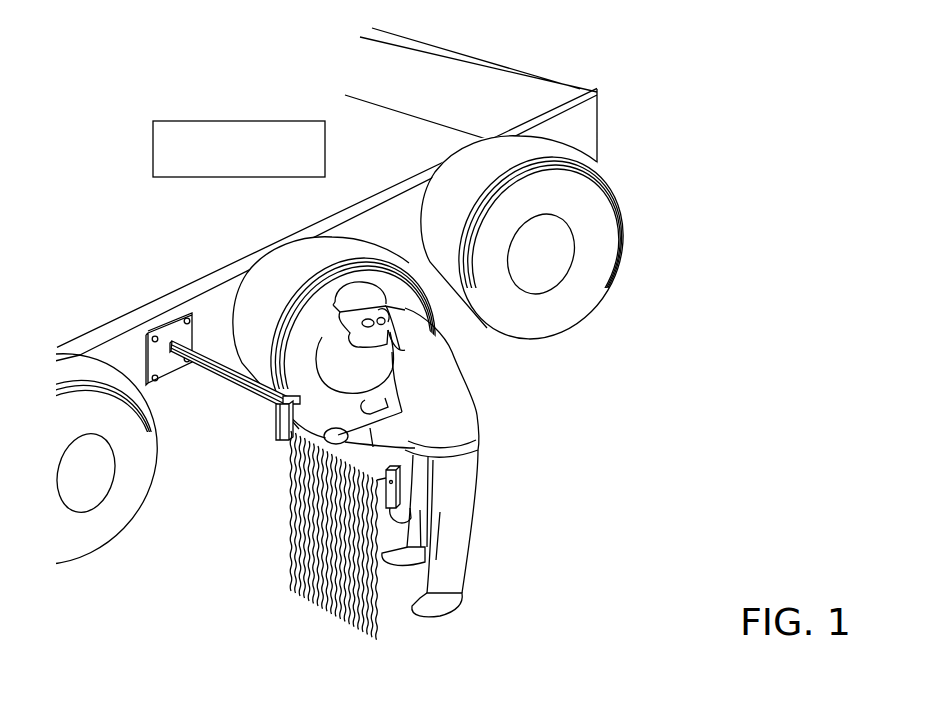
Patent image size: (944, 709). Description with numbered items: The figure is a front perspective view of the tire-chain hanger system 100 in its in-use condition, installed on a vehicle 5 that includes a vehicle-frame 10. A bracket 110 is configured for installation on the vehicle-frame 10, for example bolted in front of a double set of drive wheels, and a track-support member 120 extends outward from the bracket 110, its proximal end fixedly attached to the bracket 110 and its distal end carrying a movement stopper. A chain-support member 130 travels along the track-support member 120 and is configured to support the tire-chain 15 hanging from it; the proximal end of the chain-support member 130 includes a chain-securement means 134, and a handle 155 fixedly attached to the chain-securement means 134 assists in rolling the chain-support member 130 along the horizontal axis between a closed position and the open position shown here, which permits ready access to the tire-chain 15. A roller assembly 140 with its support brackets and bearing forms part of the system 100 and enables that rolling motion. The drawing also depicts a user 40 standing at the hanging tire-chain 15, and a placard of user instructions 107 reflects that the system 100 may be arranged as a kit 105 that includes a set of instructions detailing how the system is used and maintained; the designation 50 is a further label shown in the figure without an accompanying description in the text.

The vehicle 5 is at (326, 354).
The vehicle-frame 10 is at (569, 120).
The tire-chain 15 is at (302, 528).
The user 40 is at (443, 360).
The chain hanging system 50 is at (707, 104).
The tire-chain hanger system 100 is at (684, 80).
The kit 105 is at (727, 128).
The user instructions 107 is at (178, 122).
The bracket 110 is at (175, 328).
The track-support member 120 is at (200, 368).
The chain-support member 130 is at (280, 436).
The chain-securement means 134 is at (404, 479).
The roller assembly 140 is at (282, 394).
The handle 155 is at (410, 522).